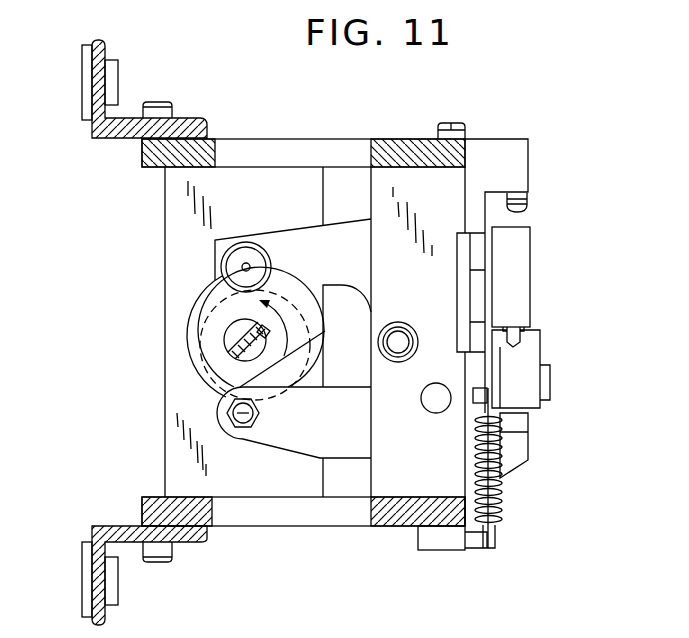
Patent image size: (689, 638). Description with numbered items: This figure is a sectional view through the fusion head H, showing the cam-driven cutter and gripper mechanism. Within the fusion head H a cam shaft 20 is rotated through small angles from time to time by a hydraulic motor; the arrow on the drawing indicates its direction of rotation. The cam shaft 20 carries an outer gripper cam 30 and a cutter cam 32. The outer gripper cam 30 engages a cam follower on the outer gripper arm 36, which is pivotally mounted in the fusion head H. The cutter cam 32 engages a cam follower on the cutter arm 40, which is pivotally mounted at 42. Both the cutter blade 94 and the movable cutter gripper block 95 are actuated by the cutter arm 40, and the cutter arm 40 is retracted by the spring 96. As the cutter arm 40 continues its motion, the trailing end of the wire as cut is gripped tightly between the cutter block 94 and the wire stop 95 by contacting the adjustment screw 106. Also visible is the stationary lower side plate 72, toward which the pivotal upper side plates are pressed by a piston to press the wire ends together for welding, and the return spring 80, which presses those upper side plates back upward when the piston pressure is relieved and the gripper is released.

The fusion head H is at (253, 124).
The stationary lower side plate 72 is at (396, 178).
The outer gripper arm 36 is at (291, 238).
The outer gripper cam 30 is at (185, 338).
The cutter cam 32 is at (212, 308).
The cam shaft 20 is at (230, 350).
The cutter arm 40 is at (258, 440).
The return spring 80 is at (401, 318).
The pivot of cutter arm 42 is at (436, 413).
The adjustment screw 106 is at (527, 200).
The movable cutter gripper block 95 is at (530, 240).
The cutter blade 94 is at (518, 388).
The spring 96 is at (502, 478).